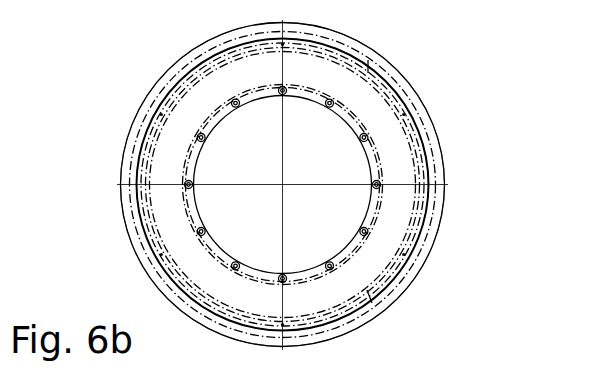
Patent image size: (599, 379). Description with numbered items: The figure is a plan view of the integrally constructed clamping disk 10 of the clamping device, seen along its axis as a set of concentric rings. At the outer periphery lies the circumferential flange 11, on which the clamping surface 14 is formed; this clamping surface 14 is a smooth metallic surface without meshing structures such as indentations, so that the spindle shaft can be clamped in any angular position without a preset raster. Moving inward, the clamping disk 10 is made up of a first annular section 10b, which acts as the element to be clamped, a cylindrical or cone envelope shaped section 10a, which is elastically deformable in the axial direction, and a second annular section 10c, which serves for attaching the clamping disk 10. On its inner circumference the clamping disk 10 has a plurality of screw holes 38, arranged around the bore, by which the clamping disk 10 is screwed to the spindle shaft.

The clamping disk 10 is at (286, 176).
The cylindrical or cone envelope shaped section 10a is at (358, 68).
The first annular section 10b is at (140, 253).
The second annular section 10c is at (370, 267).
The circumferential flange 11 is at (118, 143).
The clamping surface 14 is at (436, 184).
The screw holes 38 is at (237, 101).